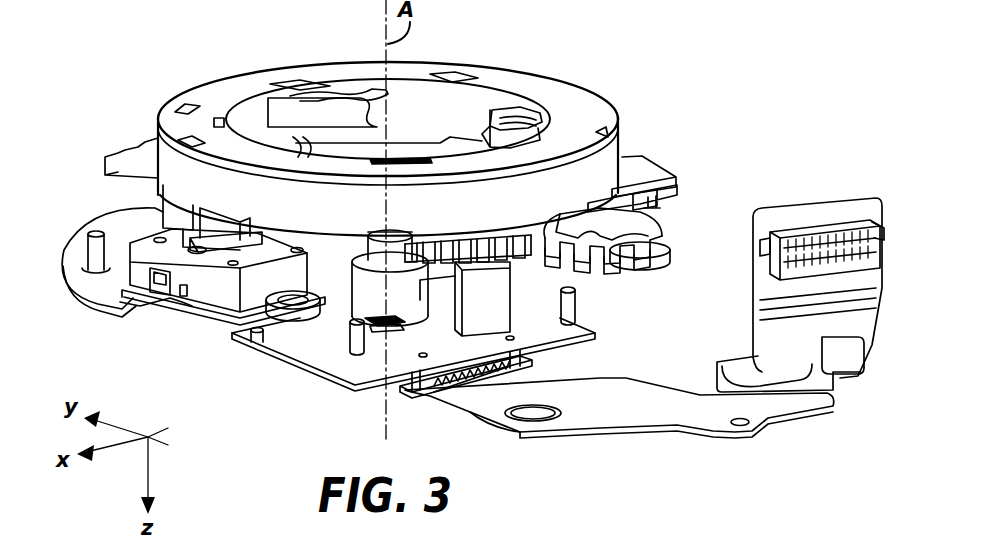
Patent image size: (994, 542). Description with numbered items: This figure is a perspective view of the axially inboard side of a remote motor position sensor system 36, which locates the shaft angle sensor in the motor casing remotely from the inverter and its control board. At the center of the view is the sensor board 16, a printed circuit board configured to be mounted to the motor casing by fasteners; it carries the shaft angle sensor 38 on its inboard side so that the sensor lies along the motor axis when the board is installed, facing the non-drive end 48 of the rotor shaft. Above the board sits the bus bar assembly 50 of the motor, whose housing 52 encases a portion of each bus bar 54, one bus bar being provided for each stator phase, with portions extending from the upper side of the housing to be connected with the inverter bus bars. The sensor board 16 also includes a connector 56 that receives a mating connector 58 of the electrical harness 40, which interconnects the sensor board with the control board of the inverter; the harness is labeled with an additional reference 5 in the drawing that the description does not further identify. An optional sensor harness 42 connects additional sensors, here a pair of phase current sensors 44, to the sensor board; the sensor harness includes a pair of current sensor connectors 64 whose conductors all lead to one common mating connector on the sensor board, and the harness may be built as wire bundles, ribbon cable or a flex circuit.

The remote motor position sensor (RMPS) system 36 is at (123, 79).
The bus bar assembly 50 is at (220, 83).
The housing 52 is at (288, 70).
The non-drive end 48 is at (360, 290).
The shaft angle sensor 38 is at (370, 320).
The bus bar 54 is at (585, 266).
The phase current sensors 44 is at (660, 188).
The current sensor connectors 64 is at (186, 302).
The sensor harness 42 is at (118, 228).
The sensor board 16 is at (262, 348).
The connector 56 is at (522, 360).
The mating connector 58 is at (438, 388).
The electrical harness 40 is at (606, 398).
The cable edge 5 is at (508, 432).